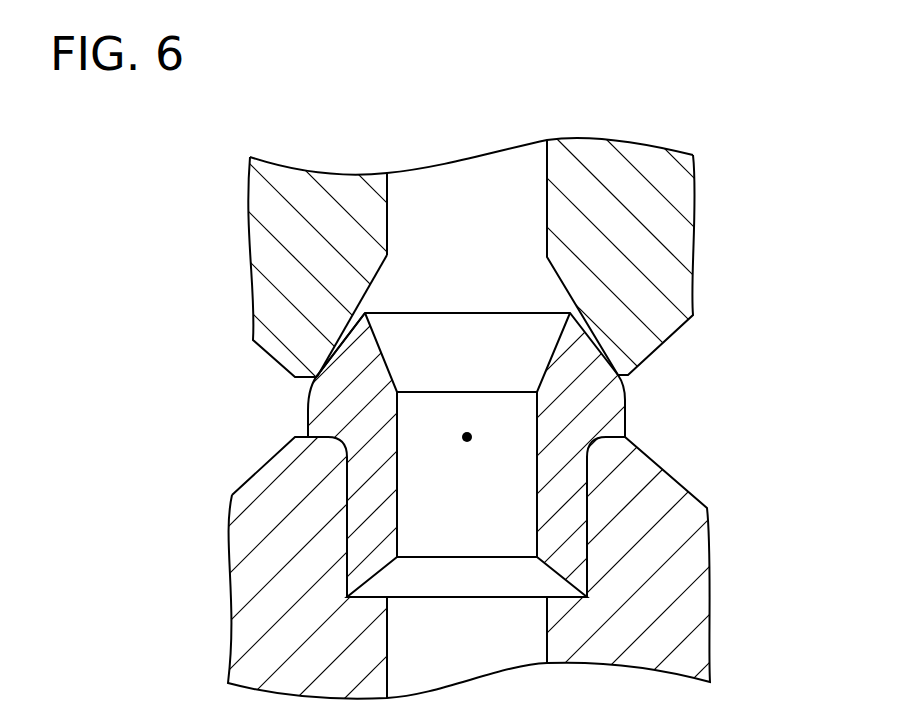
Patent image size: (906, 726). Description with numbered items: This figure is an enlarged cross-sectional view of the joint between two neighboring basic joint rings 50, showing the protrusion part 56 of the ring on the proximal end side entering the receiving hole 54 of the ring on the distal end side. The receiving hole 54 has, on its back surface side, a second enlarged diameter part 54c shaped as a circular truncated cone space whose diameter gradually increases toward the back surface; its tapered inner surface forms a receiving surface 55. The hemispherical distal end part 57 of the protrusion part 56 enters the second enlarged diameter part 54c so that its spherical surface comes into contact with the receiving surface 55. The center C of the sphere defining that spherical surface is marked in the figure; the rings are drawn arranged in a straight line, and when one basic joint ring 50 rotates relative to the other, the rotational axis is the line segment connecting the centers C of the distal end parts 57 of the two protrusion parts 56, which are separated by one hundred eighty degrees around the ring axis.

The basic joint ring 50 is at (453, 352).
The receiving hole 54 is at (426, 266).
The second enlarged diameter part 54c is at (390, 300).
The receiving surface 55 is at (342, 320).
The protrusion part 56 is at (522, 313).
The distal end part 57 is at (580, 390).
The center of sphere C is at (467, 437).